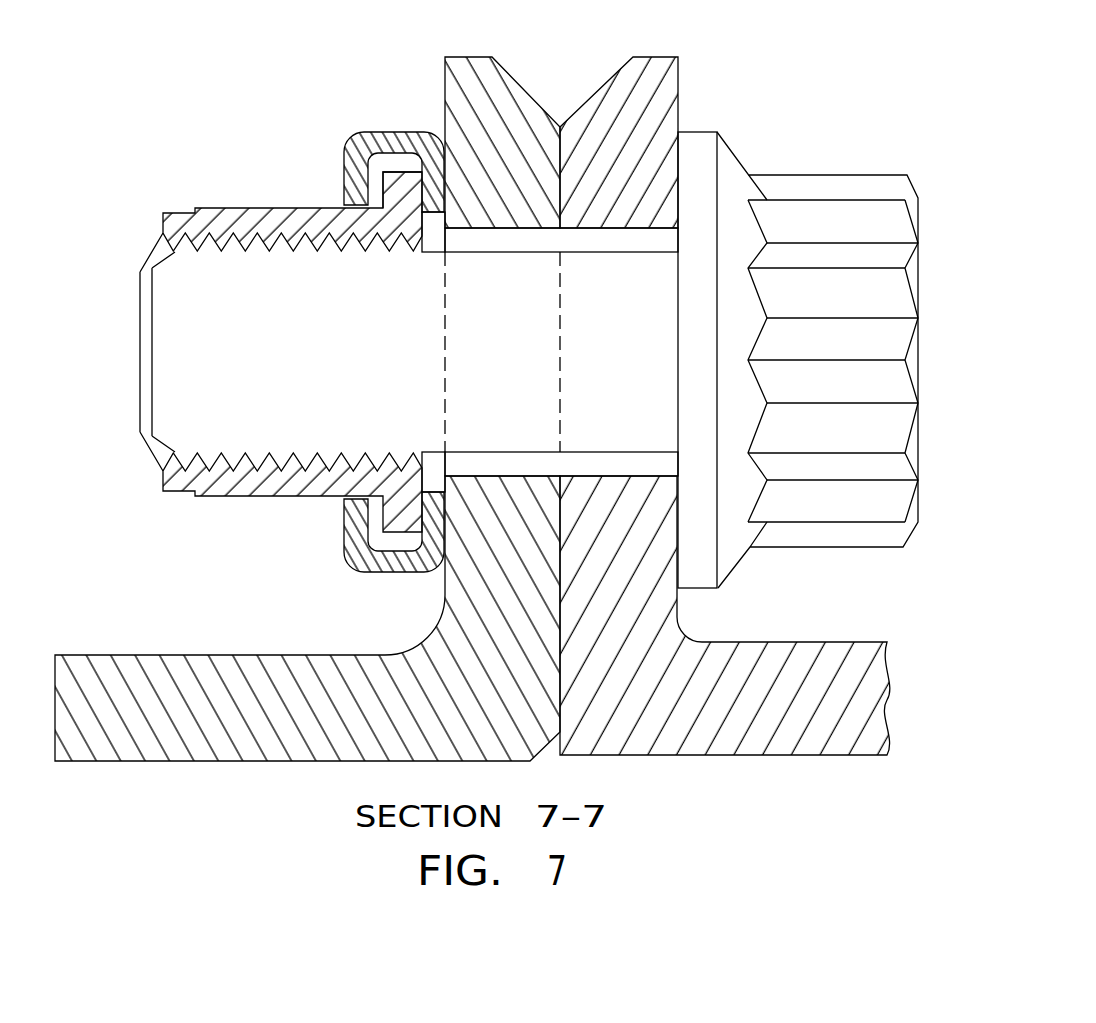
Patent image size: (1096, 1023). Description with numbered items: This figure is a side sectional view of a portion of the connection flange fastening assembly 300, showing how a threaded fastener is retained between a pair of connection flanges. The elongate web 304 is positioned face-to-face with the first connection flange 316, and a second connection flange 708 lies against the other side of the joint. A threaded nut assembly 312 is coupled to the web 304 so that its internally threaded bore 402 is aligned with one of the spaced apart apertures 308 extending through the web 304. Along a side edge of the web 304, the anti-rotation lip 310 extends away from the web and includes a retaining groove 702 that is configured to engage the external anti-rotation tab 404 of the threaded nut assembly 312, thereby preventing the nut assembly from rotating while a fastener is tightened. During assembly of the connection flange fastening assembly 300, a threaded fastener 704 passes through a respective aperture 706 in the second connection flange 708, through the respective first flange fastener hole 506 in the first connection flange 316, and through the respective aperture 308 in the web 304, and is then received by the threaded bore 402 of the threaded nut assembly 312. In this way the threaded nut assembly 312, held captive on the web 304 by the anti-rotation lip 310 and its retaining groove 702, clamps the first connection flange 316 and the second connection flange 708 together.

The connection flange fastening assembly 300 is at (218, 66).
The anti-rotation lip 310 is at (404, 128).
The first connection flange 316 is at (528, 92).
The second connection flange 708 is at (652, 95).
The threaded fasteners 704 is at (812, 175).
The retaining groove 702 is at (355, 152).
The threaded nut assemblies 312 is at (237, 215).
The external anti-rotation tab 404 is at (392, 181).
The internally threaded bore 402 is at (338, 250).
The elongate web 304 is at (436, 245).
The first flange fastener hole 506 is at (483, 231).
The aperture 706 is at (602, 230).
The spaced apart apertures 308 is at (443, 453).